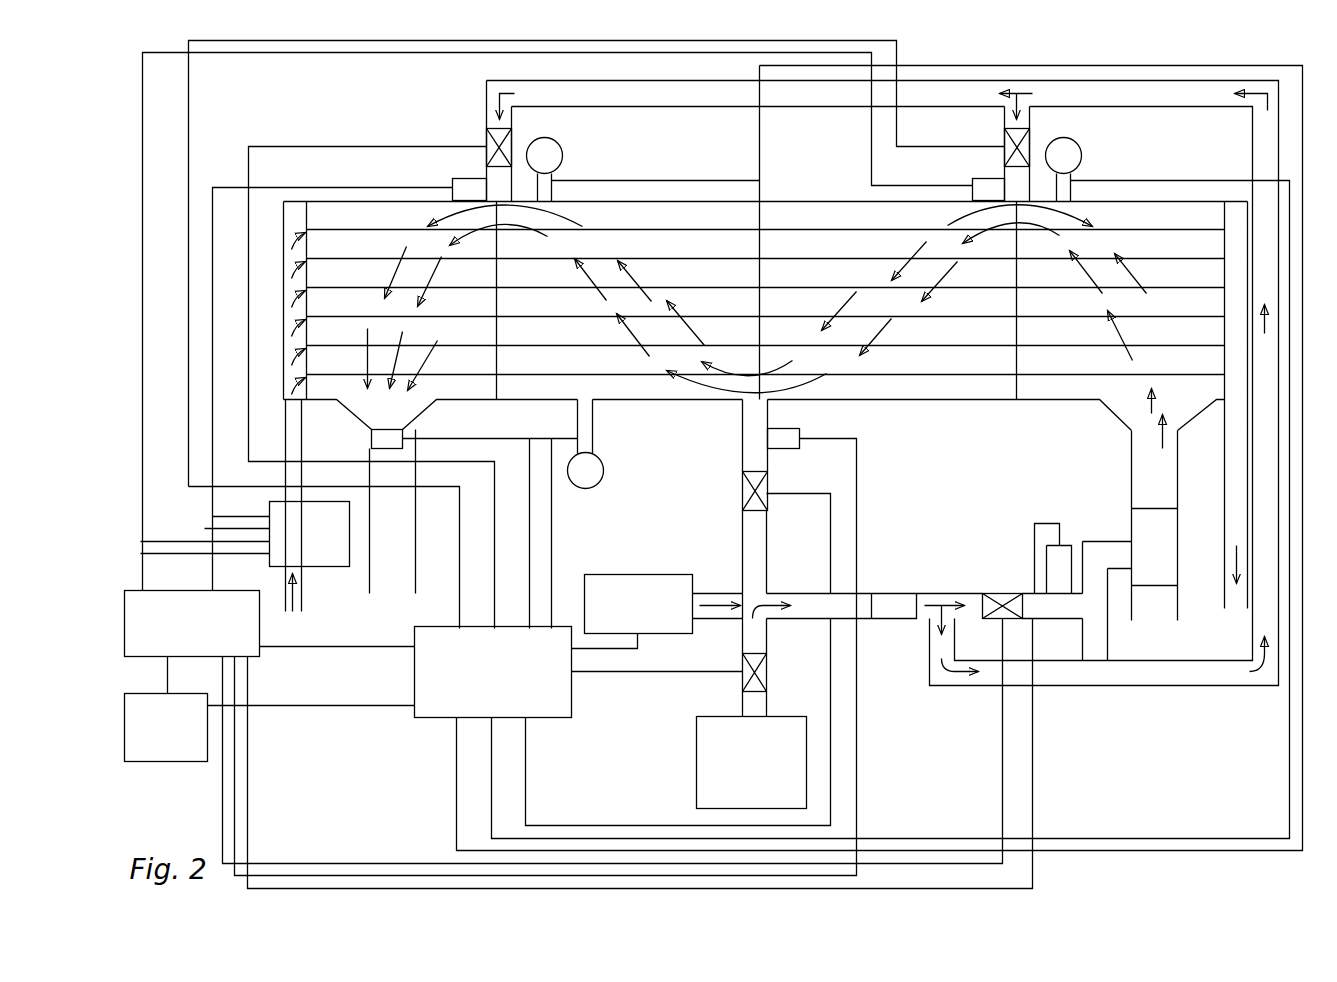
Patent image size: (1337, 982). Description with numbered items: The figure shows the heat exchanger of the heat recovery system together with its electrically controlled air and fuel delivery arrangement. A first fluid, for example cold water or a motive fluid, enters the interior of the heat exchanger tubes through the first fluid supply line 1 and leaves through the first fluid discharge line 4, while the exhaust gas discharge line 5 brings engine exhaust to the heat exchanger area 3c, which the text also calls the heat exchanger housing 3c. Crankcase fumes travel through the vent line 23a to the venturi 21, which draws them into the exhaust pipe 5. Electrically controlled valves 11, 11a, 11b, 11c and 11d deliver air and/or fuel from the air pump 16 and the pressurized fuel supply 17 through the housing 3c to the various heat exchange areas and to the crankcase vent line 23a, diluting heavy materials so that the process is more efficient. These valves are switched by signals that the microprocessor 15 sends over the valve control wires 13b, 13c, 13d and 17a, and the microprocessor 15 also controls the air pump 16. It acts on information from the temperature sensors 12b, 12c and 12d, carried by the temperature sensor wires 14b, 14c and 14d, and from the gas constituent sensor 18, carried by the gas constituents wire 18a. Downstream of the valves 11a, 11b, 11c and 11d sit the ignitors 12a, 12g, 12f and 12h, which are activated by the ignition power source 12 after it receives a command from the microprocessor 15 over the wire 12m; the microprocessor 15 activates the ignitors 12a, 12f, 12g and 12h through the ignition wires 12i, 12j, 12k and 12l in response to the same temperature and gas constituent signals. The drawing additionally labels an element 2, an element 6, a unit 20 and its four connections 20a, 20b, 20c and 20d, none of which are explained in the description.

The first fluid supply line 1 is at (765, 405).
The gas inlet 2 is at (288, 613).
The heat exchanger area 3c is at (912, 402).
The first fluid discharge line 4 is at (1230, 610).
The exhaust gas discharge line 5 is at (774, 505).
The gas flow divider 6 is at (758, 362).
The electrically controlled valve 11 is at (743, 660).
The electrically controlled valve 11a is at (1003, 595).
The electrically controlled valve 11b is at (1004, 141).
The electrically controlled valve 11c is at (486, 141).
The electrically controlled valve 11d is at (742, 500).
The ignition power source 12 is at (270, 676).
The ignitor 12a is at (1066, 547).
The temperature sensor 12b is at (1077, 144).
The temperature sensor 12c is at (556, 143).
The temperature sensor 12d is at (601, 460).
The ignitor 12f is at (973, 183).
The ignitor 12g is at (453, 183).
The ignitor 12h is at (789, 450).
The ignition wire 12i is at (1040, 751).
The ignition wire 12j is at (457, 55).
The ignition wire 12k is at (340, 189).
The ignition wire 12l is at (858, 500).
The wire 12m is at (397, 648).
The valve control wire 13b is at (898, 54).
The valve control wire 13c is at (363, 148).
The valve control wire 13d is at (830, 672).
The temperature sensor wire 14b is at (615, 182).
The temperature sensor wire 14c is at (1193, 182).
The temperature sensor wire 14d is at (553, 527).
The microprocessor 15 is at (493, 672).
The air pump 16 is at (664, 604).
The pressurized fuel supply 17 is at (752, 750).
The valve control wire 17a is at (640, 673).
The gas constituent sensor 18 is at (388, 431).
The gas constituents wire 18a is at (457, 440).
The measuring unit 20 is at (310, 534).
The signal line 20a is at (170, 545).
The signal line 20b is at (246, 512).
The signal line 20c is at (245, 557).
The signal line 20d is at (208, 530).
The venturi 21 is at (1155, 547).
The vent line 23a is at (1108, 620).